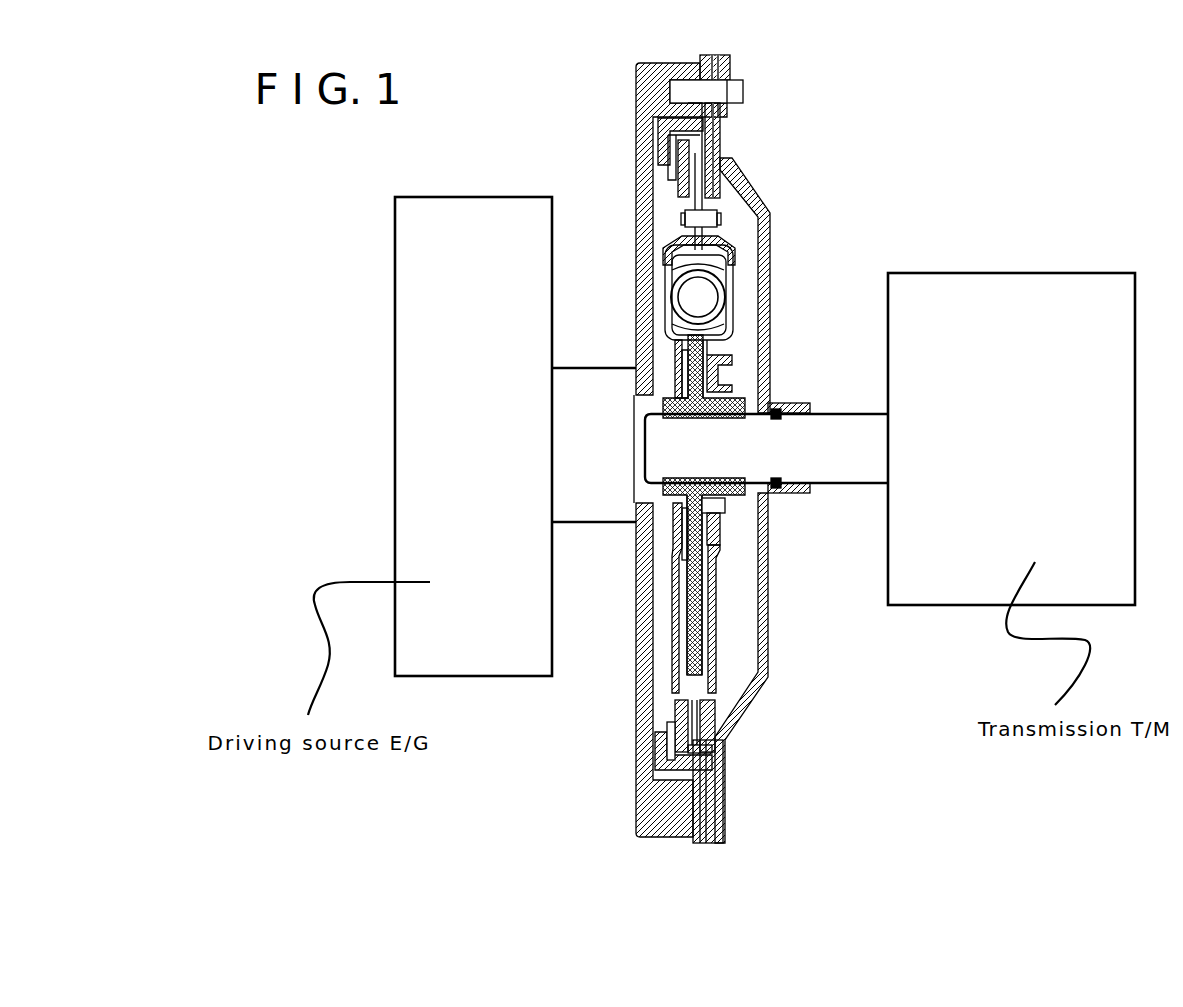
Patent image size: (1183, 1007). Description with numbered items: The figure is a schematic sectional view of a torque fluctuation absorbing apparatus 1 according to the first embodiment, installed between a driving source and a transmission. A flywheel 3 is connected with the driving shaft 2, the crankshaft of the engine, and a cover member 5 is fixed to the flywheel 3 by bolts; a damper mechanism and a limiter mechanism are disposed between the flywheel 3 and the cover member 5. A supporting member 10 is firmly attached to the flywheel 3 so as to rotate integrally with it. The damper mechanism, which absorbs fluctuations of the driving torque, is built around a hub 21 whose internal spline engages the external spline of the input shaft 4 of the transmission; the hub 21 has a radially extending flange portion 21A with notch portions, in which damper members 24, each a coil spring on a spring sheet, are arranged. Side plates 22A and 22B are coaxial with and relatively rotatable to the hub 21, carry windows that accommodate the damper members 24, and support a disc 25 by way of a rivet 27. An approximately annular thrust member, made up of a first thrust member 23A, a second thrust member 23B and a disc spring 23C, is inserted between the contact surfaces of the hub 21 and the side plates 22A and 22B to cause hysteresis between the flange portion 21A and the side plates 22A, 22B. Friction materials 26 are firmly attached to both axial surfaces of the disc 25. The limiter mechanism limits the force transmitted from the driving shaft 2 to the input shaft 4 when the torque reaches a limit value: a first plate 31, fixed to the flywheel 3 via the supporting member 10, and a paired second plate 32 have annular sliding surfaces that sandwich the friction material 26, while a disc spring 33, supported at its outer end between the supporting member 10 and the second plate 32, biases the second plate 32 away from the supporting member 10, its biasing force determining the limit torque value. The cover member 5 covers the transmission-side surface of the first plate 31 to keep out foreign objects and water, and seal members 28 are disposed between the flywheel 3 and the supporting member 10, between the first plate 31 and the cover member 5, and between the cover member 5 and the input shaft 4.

The torque fluctuation absorbing apparatus 1 is at (793, 66).
The driving shaft 2 is at (612, 388).
The flywheel 3 is at (638, 66).
The input shaft 4 is at (834, 421).
The cover member 5 is at (747, 187).
The supporting member 10 is at (697, 58).
The hub 21 is at (740, 400).
The flange portion 21A is at (702, 578).
The first side plate 22A is at (665, 250).
The second side plate 22B is at (725, 240).
The first thrust member 23A is at (675, 508).
The second thrust member 23B is at (724, 503).
The disc spring 23C is at (716, 525).
The damper member 24 is at (722, 295).
The disc 25 is at (717, 205).
The friction material 26 is at (716, 165).
The rivet 27 is at (685, 222).
The seal member 28 is at (730, 100).
The first plate 31 is at (718, 773).
The second plate 32 is at (677, 710).
The disc spring 33 is at (653, 757).